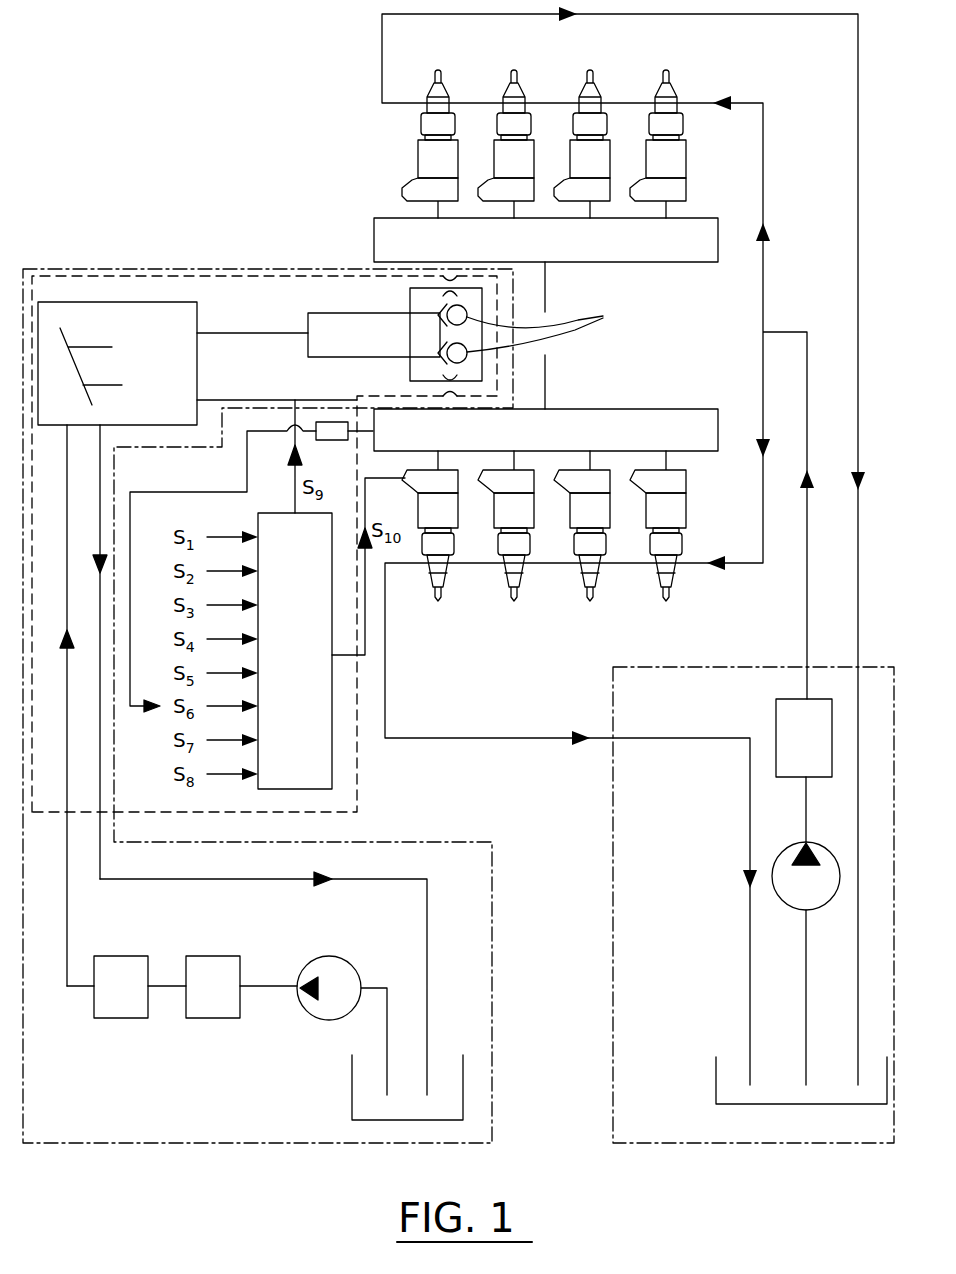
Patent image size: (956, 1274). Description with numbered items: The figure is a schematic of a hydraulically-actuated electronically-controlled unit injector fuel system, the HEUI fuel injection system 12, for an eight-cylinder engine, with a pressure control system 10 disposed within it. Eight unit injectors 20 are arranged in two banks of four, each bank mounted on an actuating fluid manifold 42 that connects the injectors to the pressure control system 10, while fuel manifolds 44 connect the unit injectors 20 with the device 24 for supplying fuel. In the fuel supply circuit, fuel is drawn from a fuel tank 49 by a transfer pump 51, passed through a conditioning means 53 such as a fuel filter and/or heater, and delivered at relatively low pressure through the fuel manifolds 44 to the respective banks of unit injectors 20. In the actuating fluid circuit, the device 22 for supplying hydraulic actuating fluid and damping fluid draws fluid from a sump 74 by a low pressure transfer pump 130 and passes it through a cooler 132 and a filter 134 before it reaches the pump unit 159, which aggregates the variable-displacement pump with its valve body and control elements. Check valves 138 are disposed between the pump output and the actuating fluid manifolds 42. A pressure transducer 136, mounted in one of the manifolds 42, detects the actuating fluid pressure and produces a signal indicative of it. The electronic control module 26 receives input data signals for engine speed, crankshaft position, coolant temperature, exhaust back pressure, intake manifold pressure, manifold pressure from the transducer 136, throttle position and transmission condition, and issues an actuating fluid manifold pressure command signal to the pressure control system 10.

The pressure control system 10 is at (130, 276).
The hydraulically-actuated electronically-controlled injector system 12 is at (246, 198).
The unit injector 20 is at (544, 335).
The device for supplying hydraulic actuating fluid and damping fluid 22 is at (492, 958).
The device for supplying fuel 24 is at (612, 1082).
The electronic control module 26 is at (309, 746).
The actuating fluid manifold 42 is at (546, 334).
The fuel manifold 44 is at (748, 103).
The fuel tank 49 is at (716, 1077).
The transfer pump 51 is at (781, 906).
The conditioning means 53 is at (776, 718).
The sump 74 is at (352, 1100).
The low pressure transfer pump 130 is at (305, 1010).
The cooler 132 is at (205, 1020).
The filter 134 is at (110, 1020).
The pressure transducer 136 is at (329, 421).
The check valve 138 is at (476, 334).
The pump unit 159 is at (199, 315).